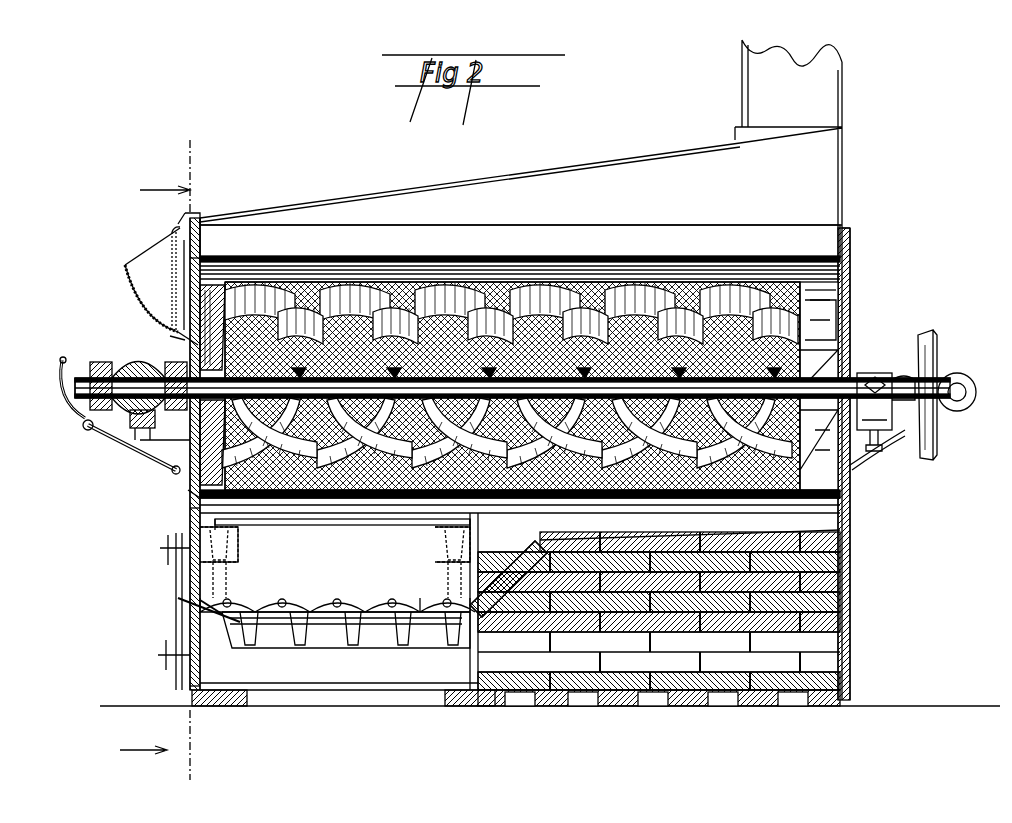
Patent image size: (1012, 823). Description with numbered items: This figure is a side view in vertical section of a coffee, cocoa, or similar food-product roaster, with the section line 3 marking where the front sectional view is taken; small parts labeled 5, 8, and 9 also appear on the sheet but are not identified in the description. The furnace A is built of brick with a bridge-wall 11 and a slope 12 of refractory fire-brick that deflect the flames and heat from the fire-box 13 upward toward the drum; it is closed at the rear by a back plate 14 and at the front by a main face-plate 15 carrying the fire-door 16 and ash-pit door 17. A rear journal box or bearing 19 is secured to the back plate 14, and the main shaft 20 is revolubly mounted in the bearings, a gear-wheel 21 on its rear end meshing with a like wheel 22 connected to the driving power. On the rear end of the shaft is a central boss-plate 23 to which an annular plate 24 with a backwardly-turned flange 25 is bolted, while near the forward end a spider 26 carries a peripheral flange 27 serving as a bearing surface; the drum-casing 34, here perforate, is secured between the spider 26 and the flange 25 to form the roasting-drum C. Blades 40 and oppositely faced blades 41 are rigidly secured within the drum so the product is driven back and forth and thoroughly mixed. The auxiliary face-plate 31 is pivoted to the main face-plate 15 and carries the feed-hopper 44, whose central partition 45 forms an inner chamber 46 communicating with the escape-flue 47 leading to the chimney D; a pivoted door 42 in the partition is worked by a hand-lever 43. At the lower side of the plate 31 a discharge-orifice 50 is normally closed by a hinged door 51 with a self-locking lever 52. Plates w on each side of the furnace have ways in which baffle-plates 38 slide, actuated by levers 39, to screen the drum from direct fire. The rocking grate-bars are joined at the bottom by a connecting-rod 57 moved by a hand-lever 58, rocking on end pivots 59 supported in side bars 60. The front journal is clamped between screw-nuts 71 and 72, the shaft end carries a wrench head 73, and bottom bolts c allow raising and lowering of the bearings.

The section line 3- 3 is at (162, 460).
The plate 5 is at (190, 510).
The bearing cap 8 is at (135, 366).
The wall plate 9 is at (190, 285).
The bridge-wall 11 is at (523, 532).
The slope 12 is at (659, 605).
The fire-box 13 is at (253, 568).
The back plate 14 is at (850, 537).
The main face-plate 15 is at (186, 200).
The fire-door 16 is at (160, 548).
The ash-pit door 17 is at (158, 655).
The journal box or bearing 19 is at (905, 364).
The main shaft 20 is at (870, 375).
The gear-wheel 21 is at (937, 352).
The gear-wheel 22 is at (976, 394).
The central boss-plate 23 is at (830, 345).
The annular plate 24 is at (818, 318).
The backwardly-turned flange 25 is at (820, 288).
The spider 26 is at (212, 385).
The peripheral flange 27 is at (340, 506).
The auxiliary face-plate 31 is at (170, 338).
The drum-casing 34 is at (425, 500).
The baffle-plates 38 is at (372, 530).
The levers 39 is at (176, 580).
The blades 40 is at (498, 377).
The blades 41 is at (515, 383).
The pivoted door 42 is at (170, 286).
The hand-lever 43 is at (169, 331).
The feed-hopper 44 is at (124, 268).
The central partition 45 is at (152, 244).
The inner chamber 46 is at (178, 285).
The escape-flue 47 is at (520, 241).
The discharge-orifice 50 is at (188, 492).
The door 51 is at (165, 434).
The actuating and self-locking lever 52 is at (112, 448).
The connecting-rod 57 is at (305, 650).
The hand-lever 58 is at (178, 606).
The end pivots 59 is at (350, 600).
The supporting side bars 60 is at (418, 597).
The screw-nut 71 is at (104, 362).
The screw-nut 72 is at (145, 423).
The square or hexagonal head 73 is at (80, 372).
The furnace A is at (335, 570).
The roasting-drum C is at (850, 255).
The chimney D is at (788, 134).
The bottom bolts c is at (878, 448).
The plates w is at (428, 550).